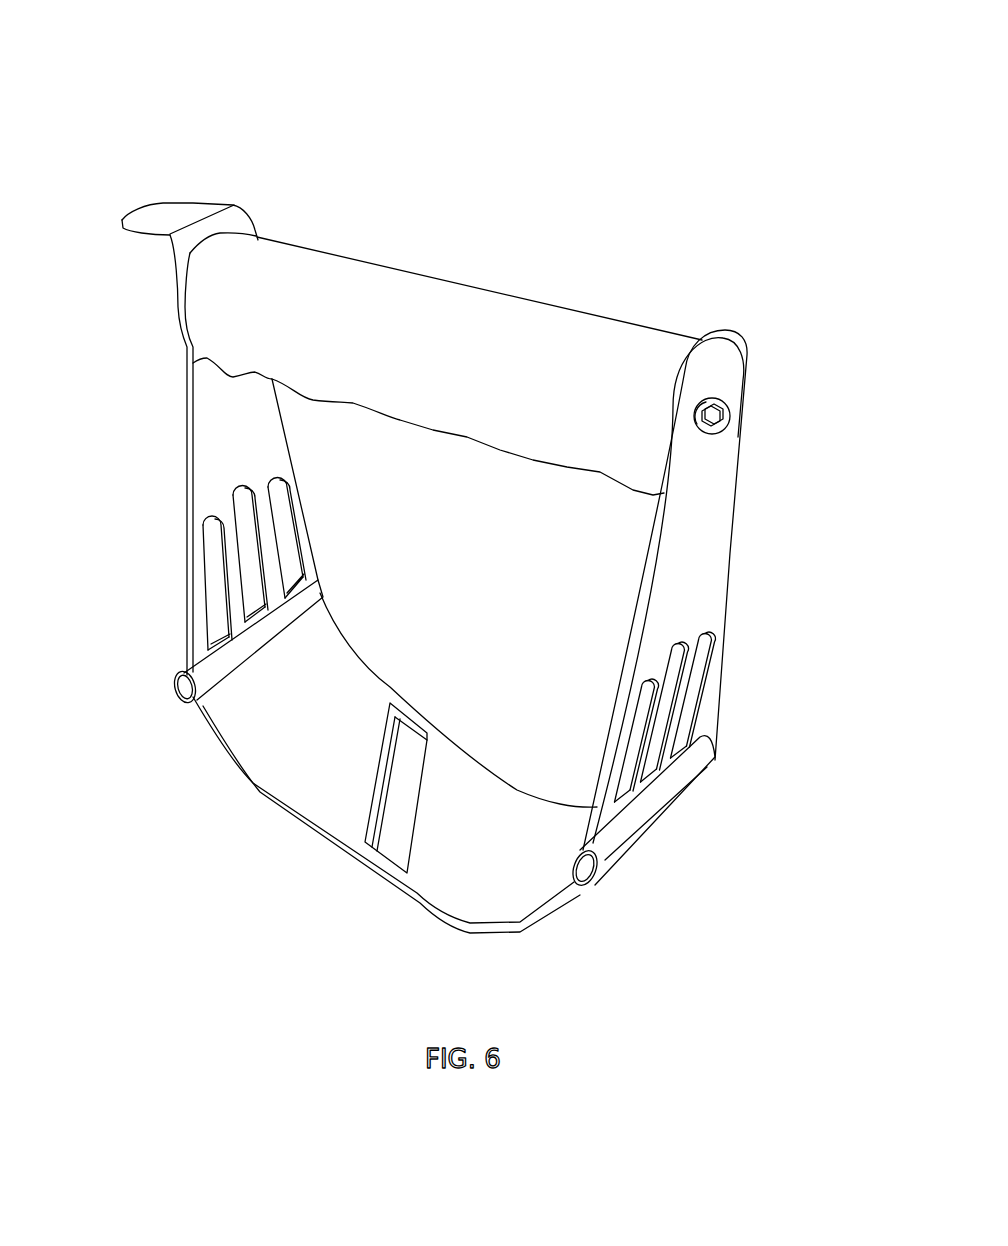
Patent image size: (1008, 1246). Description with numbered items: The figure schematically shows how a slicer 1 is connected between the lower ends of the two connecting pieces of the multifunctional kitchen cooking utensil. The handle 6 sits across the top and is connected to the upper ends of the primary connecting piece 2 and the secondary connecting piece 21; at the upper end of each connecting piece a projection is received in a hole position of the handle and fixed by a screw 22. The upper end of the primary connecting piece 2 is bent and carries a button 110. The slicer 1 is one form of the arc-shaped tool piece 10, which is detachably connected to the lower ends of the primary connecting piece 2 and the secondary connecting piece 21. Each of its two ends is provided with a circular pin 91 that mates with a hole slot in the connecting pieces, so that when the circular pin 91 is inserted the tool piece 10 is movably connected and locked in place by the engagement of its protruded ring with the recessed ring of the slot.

The button 110 is at (168, 217).
The handle 6 is at (453, 322).
The primary connecting piece 2 is at (217, 475).
The secondary connecting piece 21 is at (713, 555).
The screw 22 is at (717, 403).
The circular pin 91 is at (184, 700).
The tool piece 10 is at (292, 812).
The slicer 1 is at (408, 803).